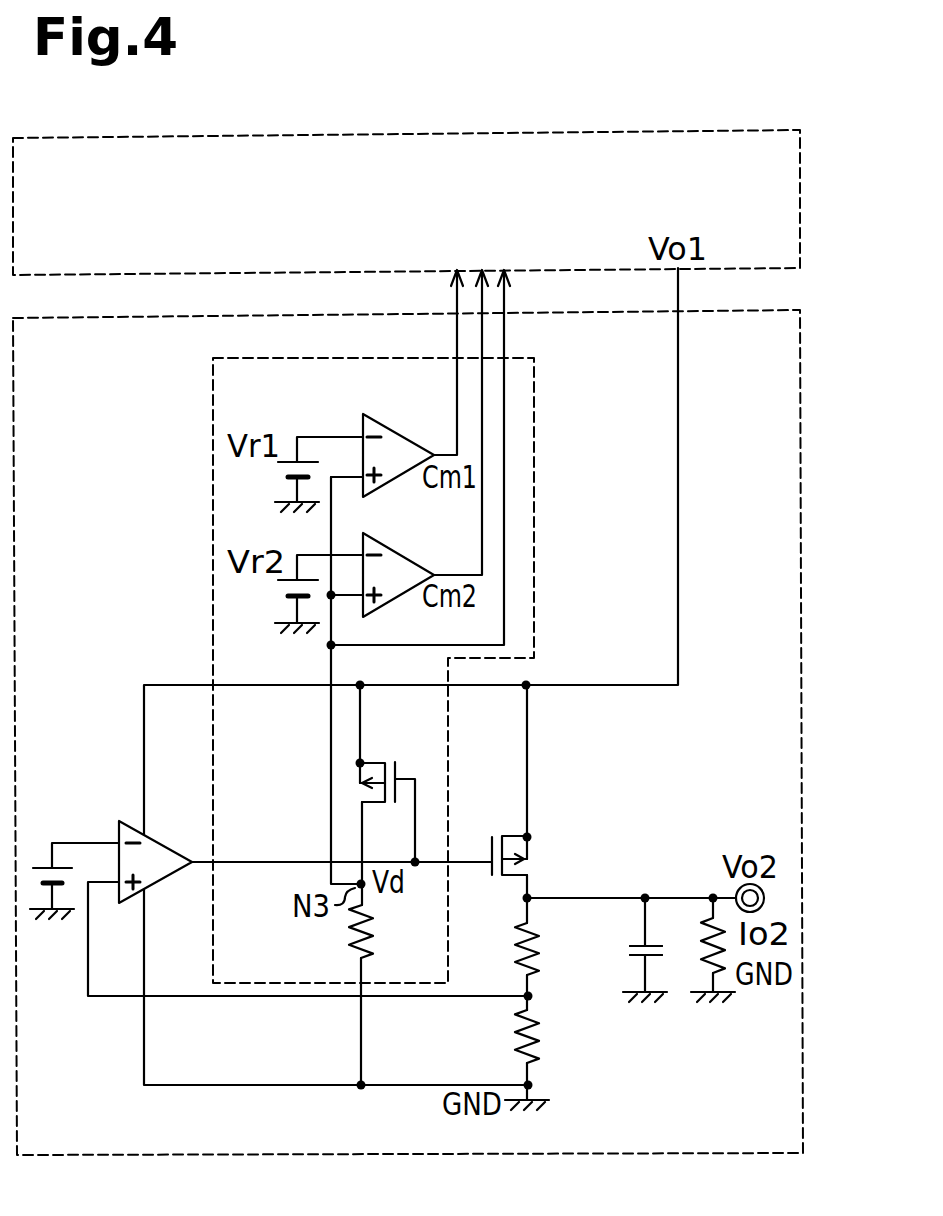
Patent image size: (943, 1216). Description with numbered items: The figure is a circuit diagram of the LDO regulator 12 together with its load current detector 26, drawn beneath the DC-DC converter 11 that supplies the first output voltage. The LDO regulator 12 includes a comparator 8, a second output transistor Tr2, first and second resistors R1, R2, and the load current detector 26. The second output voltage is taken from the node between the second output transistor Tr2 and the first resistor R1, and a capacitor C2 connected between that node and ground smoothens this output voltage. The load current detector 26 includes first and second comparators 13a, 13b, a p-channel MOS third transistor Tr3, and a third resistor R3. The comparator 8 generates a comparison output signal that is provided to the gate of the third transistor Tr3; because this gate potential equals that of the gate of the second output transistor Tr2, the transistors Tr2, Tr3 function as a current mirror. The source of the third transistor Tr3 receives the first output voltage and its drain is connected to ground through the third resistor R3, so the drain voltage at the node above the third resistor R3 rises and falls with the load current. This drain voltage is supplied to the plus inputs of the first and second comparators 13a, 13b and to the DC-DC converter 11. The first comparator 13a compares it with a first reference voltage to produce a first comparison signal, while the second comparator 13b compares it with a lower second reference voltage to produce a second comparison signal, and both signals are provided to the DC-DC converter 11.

The DC-DC converter 11 is at (650, 130).
The LDO regulator 12 is at (803, 356).
The load current detector 26 is at (213, 484).
The first comparator 13a is at (398, 432).
The second comparator 13b is at (403, 557).
The comparator 8 is at (158, 842).
The third transistor Tr3 is at (378, 762).
The second output transistor Tr2 is at (523, 873).
The first resistor R1 is at (520, 945).
The second resistor R2 is at (515, 1033).
The third resistor R3 is at (370, 945).
The capacitor C2 is at (640, 946).